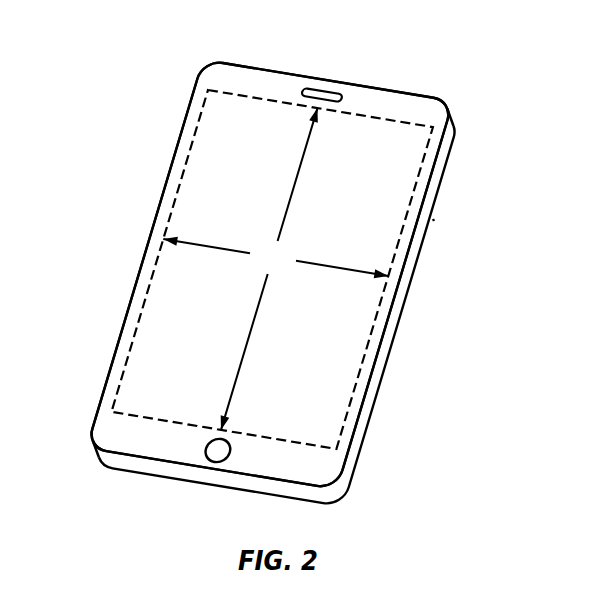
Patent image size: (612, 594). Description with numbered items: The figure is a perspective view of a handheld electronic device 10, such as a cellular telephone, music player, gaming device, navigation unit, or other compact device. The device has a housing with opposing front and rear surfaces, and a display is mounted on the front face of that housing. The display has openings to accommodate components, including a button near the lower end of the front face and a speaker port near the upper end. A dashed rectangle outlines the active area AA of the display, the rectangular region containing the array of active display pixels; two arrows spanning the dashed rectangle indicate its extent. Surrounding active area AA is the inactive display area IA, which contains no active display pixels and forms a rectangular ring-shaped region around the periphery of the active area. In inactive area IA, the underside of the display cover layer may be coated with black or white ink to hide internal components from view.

The electronic device 10 is at (458, 55).
The inactive display area IA is at (130, 325).
The active area AA is at (275, 269).